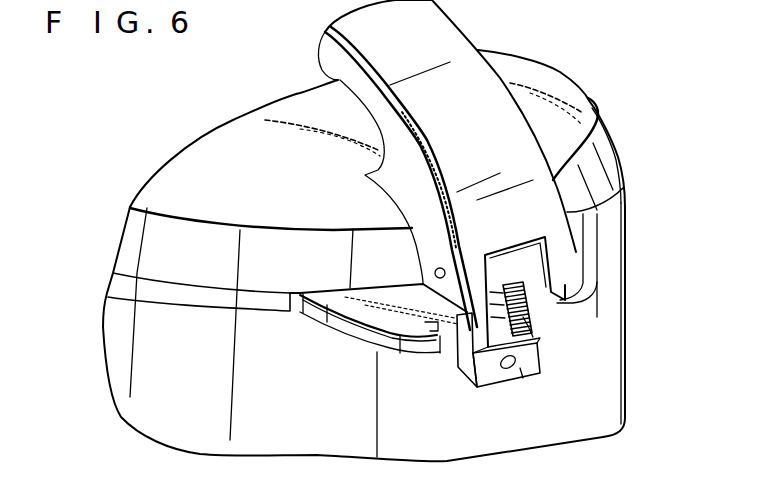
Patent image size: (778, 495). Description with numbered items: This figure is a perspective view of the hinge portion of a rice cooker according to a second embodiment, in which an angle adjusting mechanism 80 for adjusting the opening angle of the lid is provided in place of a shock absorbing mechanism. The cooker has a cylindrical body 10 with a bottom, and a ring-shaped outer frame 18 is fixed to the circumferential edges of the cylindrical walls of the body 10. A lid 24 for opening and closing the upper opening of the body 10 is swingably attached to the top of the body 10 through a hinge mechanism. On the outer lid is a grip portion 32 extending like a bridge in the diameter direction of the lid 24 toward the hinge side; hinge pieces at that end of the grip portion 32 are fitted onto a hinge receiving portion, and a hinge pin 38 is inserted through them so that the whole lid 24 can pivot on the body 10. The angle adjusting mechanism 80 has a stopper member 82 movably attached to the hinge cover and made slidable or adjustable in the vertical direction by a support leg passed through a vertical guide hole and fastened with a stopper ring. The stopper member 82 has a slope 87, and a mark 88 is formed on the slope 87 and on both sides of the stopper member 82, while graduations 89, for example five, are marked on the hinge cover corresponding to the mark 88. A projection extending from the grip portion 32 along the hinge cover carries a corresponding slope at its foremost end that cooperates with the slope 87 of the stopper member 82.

The body 10 is at (625, 372).
The outer frame 18 is at (263, 307).
The lid 24 is at (567, 80).
The grip portion 32 is at (460, 26).
The hinge pin 38 is at (435, 273).
The angle adjusting mechanism 80 is at (535, 330).
The stopper member 82 is at (523, 378).
The slope 87 is at (512, 280).
The mark 88 is at (533, 337).
The graduations 89 is at (466, 366).